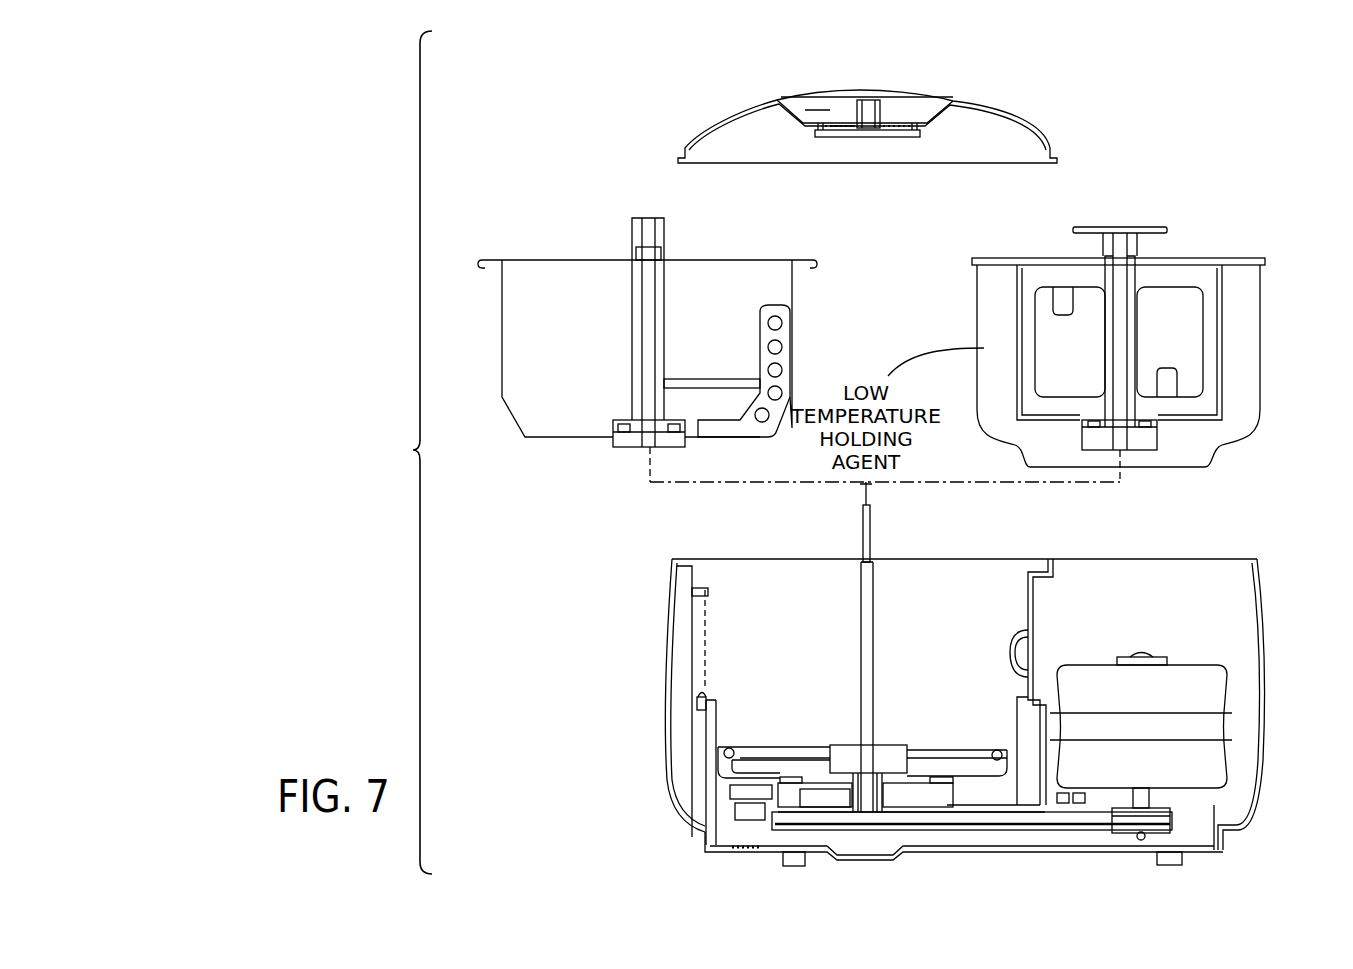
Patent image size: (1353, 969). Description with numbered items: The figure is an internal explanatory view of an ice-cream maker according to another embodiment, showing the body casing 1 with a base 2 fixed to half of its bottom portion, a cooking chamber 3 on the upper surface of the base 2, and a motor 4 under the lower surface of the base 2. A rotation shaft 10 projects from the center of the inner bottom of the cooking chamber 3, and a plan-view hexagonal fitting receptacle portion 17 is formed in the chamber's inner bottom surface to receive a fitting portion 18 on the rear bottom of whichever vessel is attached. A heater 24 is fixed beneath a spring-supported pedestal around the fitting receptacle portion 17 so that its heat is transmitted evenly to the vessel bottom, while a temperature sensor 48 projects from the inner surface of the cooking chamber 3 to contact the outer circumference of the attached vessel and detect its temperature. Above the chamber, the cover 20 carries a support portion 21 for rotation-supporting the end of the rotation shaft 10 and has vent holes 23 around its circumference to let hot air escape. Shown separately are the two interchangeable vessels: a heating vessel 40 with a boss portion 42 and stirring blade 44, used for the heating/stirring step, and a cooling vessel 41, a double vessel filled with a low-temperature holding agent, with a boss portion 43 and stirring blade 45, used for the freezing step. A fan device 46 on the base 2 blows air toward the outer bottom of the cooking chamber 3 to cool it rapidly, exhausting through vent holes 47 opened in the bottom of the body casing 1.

The cover 20 is at (758, 106).
The vent holes 23 is at (840, 116).
The support portion 21 is at (922, 111).
The heating vessel 40 is at (530, 272).
The boss portion 42 is at (663, 237).
The stirring blade 44 is at (786, 337).
The fitting portion 18 is at (627, 441).
The cooling vessel 41 is at (1015, 252).
The boss portion 43 is at (1130, 243).
The stirring blade 45 is at (1210, 343).
The rotation shaft 10 is at (868, 542).
The body casing 1 is at (672, 583).
The temperature sensor 48 is at (1021, 637).
The cooking chamber 3 is at (714, 712).
The heater 24 is at (732, 747).
The fitting receptacle portion 17 is at (885, 767).
The fan device 46 is at (737, 792).
The vent holes 47 is at (748, 849).
The motor 4 is at (1102, 775).
The base 2 is at (1212, 845).